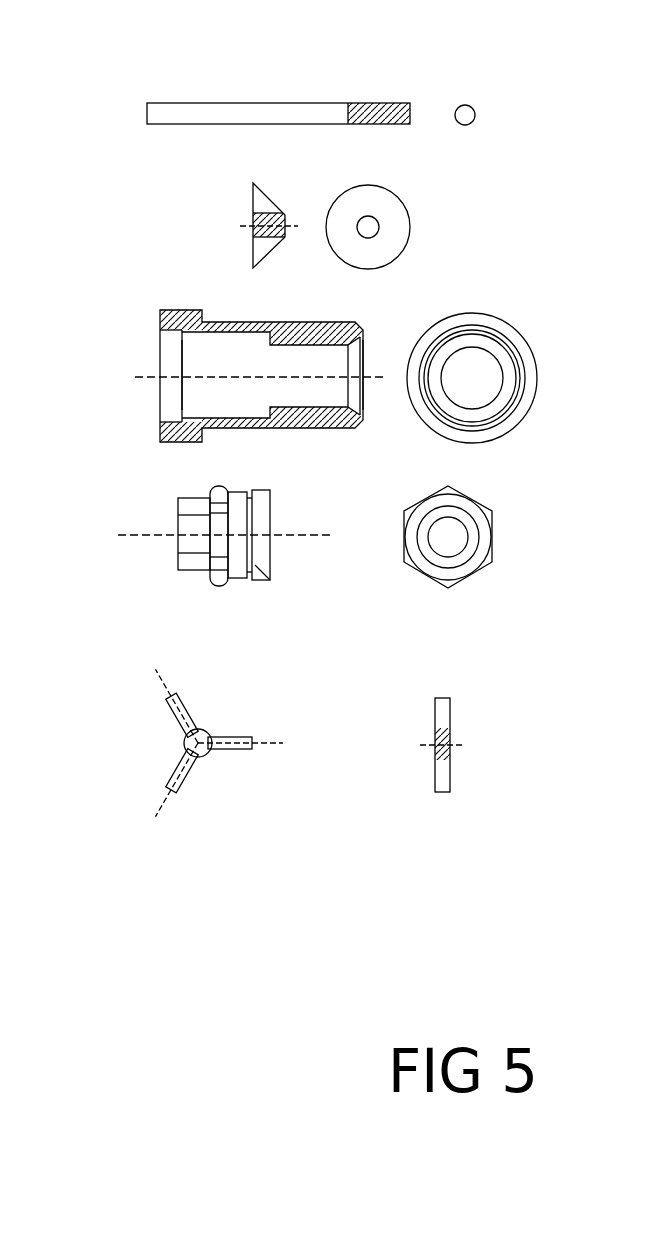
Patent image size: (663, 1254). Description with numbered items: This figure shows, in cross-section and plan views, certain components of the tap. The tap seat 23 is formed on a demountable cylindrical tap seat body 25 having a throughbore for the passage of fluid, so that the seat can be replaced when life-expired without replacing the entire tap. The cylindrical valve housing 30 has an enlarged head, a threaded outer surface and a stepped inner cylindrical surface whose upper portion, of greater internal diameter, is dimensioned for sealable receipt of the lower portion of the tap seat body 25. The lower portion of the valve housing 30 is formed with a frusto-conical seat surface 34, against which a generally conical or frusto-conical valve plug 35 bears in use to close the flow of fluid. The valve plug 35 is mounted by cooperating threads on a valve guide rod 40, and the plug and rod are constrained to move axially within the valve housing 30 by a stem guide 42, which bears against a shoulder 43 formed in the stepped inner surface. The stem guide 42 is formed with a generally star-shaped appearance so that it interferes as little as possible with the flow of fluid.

The tap seat 23 is at (177, 523).
The tap seat body 25 is at (235, 520).
The valve housing 30 is at (320, 337).
The frusto-conical seat surface 34 is at (357, 407).
The valve plug 35 is at (258, 245).
The valve guide rod 40 is at (268, 112).
The stem guide 42 is at (203, 762).
The shoulder 43 is at (262, 338).